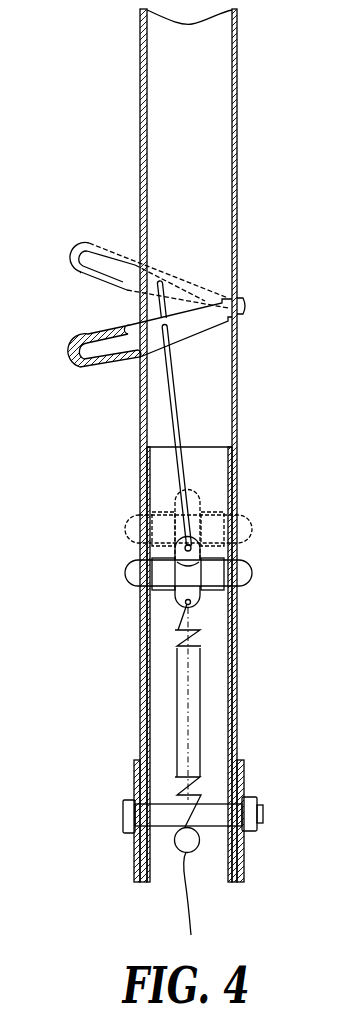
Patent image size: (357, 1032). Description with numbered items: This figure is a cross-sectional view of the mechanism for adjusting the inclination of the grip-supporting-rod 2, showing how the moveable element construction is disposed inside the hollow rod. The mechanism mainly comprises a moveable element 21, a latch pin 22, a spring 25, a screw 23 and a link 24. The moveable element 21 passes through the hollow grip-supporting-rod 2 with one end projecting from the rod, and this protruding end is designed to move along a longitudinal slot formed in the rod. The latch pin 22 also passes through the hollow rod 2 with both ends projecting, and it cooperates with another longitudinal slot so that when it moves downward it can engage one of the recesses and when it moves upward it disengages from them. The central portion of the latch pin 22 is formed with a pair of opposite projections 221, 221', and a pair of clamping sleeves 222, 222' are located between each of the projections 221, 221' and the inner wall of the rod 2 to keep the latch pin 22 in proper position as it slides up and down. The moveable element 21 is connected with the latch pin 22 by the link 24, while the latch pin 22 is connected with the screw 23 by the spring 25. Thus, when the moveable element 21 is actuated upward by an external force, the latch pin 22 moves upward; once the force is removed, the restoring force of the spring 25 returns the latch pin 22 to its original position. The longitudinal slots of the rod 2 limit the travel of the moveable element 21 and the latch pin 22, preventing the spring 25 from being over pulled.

The grip-supporting-rod 2 is at (237, 233).
The moveable element 21 is at (95, 371).
The latch pin 22 is at (127, 573).
The screw 23 is at (247, 830).
The link 24 is at (183, 455).
The spring 25 is at (193, 710).
The projection 221 is at (220, 549).
The projection 221' is at (242, 625).
The clamping sleeve 222 is at (114, 588).
The clamping sleeve 222' is at (255, 585).